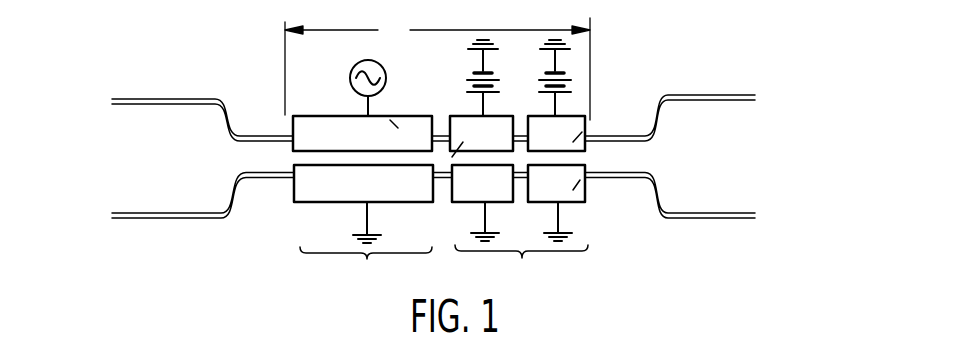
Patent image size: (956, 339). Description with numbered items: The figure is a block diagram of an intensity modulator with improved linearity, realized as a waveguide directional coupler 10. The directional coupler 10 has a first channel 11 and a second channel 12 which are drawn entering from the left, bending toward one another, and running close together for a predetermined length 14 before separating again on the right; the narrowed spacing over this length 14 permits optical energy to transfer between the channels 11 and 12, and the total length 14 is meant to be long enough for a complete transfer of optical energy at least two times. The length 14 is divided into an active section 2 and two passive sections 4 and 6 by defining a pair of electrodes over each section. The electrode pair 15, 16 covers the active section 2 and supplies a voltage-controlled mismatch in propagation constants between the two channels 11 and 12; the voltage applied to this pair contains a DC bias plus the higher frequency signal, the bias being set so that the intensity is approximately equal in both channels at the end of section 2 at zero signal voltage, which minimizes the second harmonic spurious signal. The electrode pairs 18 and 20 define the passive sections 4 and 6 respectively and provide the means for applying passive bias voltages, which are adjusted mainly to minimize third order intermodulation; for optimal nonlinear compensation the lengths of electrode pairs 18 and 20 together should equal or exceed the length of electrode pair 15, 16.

The active section 2 is at (328, 118).
The passive section 4 is at (500, 116).
The passive section 6 is at (586, 127).
The directional coupler 10 is at (280, 111).
The first channel 11 is at (160, 219).
The second channel 12 is at (162, 100).
The predetermined length 14 is at (437, 68).
The electrode 15 is at (398, 122).
The electrode 16 is at (295, 203).
The electrode pair 18 is at (460, 190).
The electrode pair 20 is at (577, 146).